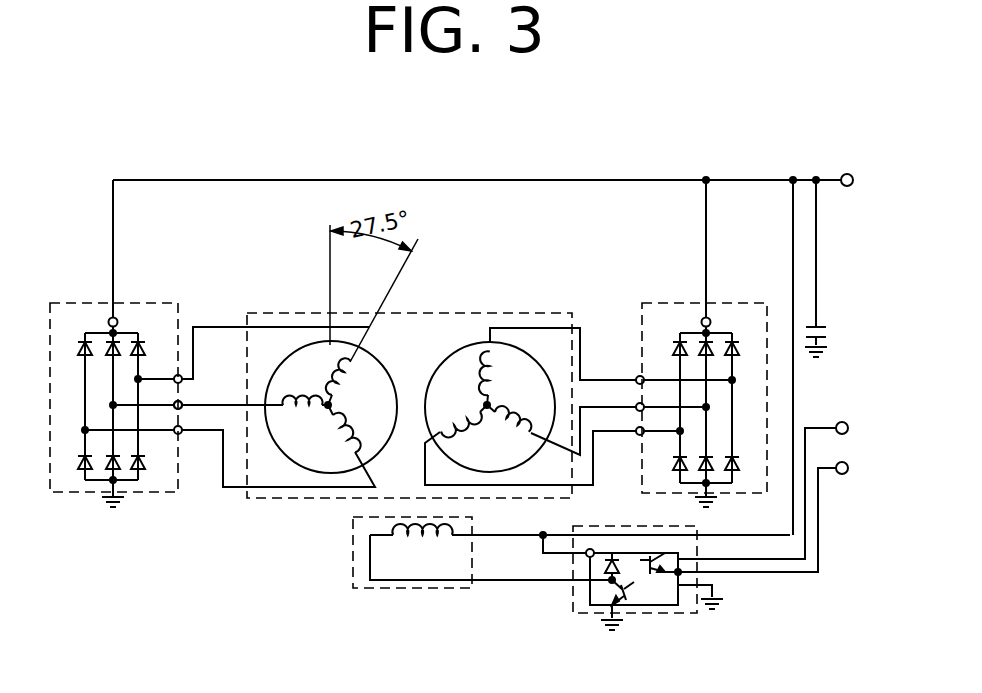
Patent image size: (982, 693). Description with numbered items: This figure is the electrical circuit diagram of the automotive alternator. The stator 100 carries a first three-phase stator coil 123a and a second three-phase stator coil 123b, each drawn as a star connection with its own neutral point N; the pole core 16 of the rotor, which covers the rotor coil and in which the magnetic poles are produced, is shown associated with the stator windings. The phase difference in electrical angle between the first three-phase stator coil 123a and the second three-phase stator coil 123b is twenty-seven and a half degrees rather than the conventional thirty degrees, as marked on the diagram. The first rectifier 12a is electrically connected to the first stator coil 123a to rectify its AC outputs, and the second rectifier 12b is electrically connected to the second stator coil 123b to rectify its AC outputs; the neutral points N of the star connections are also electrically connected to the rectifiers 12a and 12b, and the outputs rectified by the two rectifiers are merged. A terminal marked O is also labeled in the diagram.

The first rectifier 12a is at (147, 300).
The second rectifier 12b is at (680, 302).
The stator 100 is at (409, 387).
The pole core 16 is at (434, 400).
The first three-phase stator coil 123a is at (275, 443).
The second three-phase stator coil 123b is at (538, 365).
The neutral point N is at (336, 405).
The output terminal O is at (183, 403).